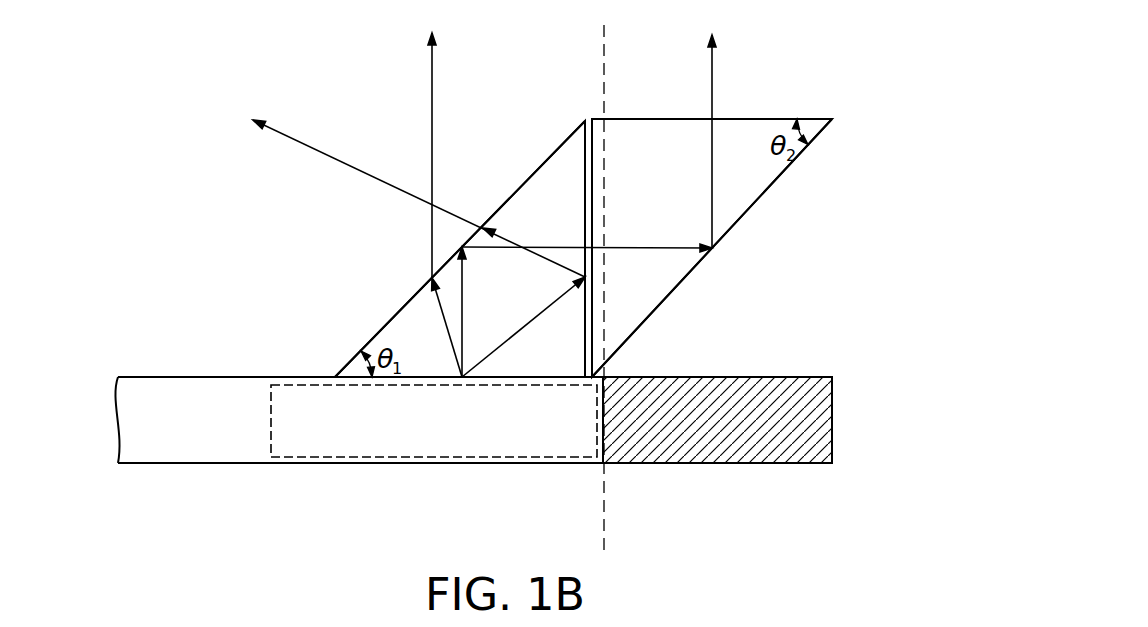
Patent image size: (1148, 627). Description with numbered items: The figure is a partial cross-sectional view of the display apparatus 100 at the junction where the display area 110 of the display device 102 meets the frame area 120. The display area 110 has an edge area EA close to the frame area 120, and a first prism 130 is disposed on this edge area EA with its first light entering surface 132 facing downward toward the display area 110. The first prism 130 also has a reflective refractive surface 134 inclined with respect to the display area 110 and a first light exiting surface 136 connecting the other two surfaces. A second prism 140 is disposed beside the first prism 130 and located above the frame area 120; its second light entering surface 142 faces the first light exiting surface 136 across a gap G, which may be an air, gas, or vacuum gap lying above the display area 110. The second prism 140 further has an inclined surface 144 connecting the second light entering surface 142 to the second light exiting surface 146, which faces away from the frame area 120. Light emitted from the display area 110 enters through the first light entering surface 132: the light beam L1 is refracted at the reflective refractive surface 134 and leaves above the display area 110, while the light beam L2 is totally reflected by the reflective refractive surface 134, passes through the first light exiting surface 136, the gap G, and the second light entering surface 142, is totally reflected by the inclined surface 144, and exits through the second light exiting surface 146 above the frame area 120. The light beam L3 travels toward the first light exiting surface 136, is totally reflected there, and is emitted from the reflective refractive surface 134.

The display apparatus 100 is at (799, 552).
The display device 102 is at (473, 420).
The display area 110 is at (225, 464).
The frame area 120 is at (717, 464).
The first prism 130 is at (555, 177).
The first light entering surface 132 is at (493, 367).
The reflective refractive surface 134 is at (500, 189).
The first light exiting surface 136 is at (571, 317).
The second prism 140 is at (653, 143).
The second light entering surface 142 is at (604, 223).
The inclined surface 144 is at (792, 188).
The second light exiting surface 146 is at (778, 109).
The gap G is at (600, 335).
The edge area EA is at (372, 458).
The light beam L1 is at (430, 77).
The light beam L2 is at (715, 70).
The light beam L3 is at (307, 147).